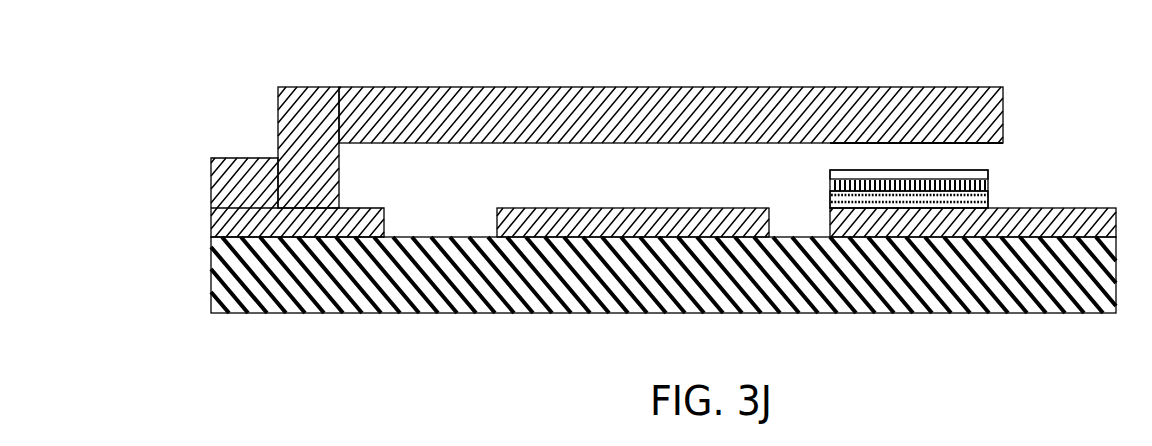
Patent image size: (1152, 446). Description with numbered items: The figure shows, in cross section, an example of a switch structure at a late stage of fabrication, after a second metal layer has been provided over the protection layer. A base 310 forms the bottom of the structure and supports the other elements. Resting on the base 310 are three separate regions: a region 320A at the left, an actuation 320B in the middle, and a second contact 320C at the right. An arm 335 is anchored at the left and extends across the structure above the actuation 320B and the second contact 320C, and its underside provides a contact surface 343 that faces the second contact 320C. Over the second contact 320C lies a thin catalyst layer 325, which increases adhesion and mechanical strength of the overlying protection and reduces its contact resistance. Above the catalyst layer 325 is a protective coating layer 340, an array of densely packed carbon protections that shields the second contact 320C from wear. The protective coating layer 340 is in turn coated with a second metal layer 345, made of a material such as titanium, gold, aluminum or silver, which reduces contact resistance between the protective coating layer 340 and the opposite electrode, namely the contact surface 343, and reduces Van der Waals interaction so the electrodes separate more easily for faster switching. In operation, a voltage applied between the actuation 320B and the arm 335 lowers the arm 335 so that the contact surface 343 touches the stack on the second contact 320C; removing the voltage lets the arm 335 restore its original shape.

The base 310 is at (625, 314).
The first sacrificial/anchor layer portion 320A is at (210, 230).
The actuation 320B is at (612, 218).
The second contact 320C is at (1097, 206).
The catalyst layer 325 is at (990, 196).
The arm 335 is at (502, 107).
The protective coating layer 340 is at (907, 177).
The contact surface 343 is at (920, 143).
The second metal layer 345 is at (990, 170).